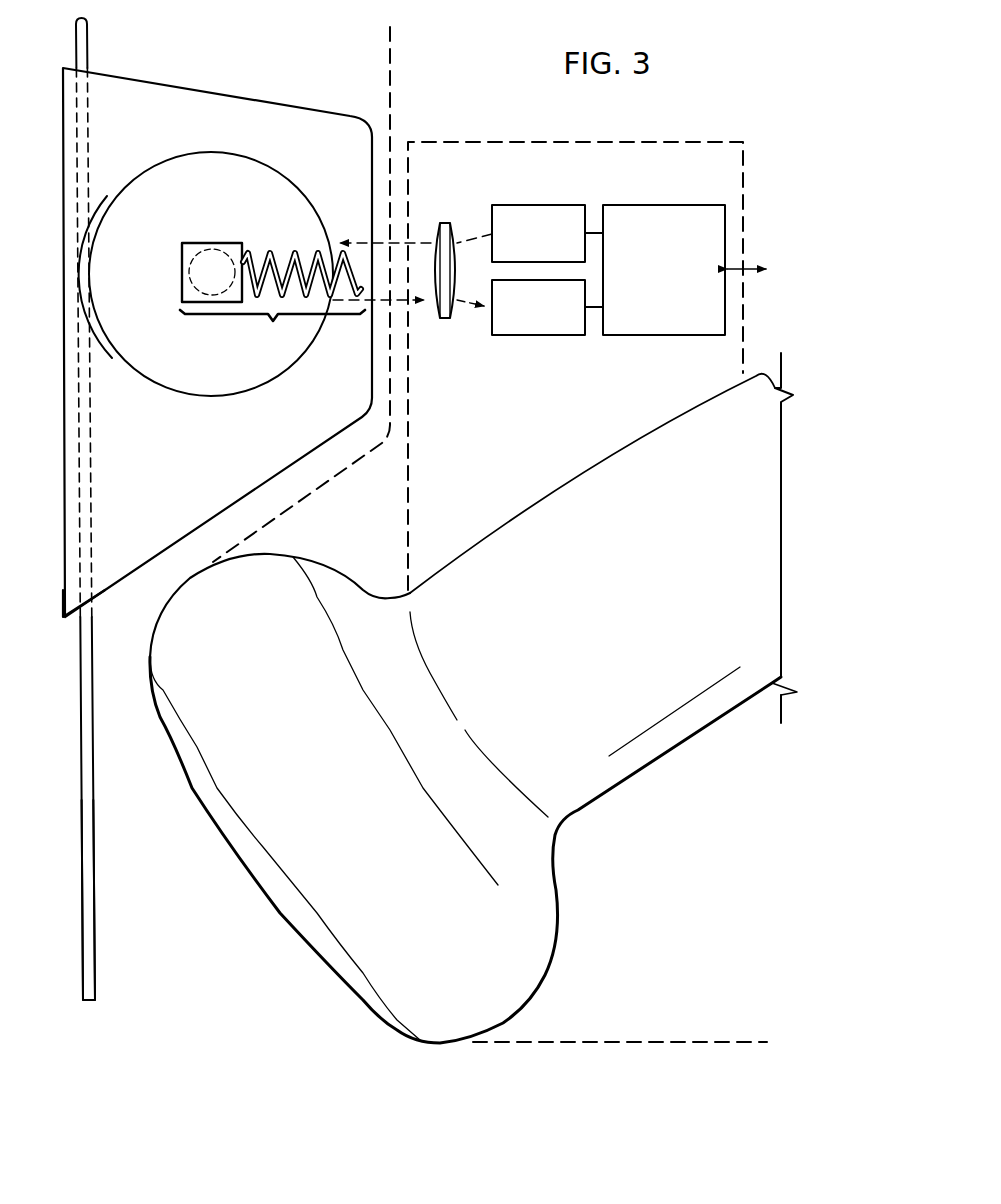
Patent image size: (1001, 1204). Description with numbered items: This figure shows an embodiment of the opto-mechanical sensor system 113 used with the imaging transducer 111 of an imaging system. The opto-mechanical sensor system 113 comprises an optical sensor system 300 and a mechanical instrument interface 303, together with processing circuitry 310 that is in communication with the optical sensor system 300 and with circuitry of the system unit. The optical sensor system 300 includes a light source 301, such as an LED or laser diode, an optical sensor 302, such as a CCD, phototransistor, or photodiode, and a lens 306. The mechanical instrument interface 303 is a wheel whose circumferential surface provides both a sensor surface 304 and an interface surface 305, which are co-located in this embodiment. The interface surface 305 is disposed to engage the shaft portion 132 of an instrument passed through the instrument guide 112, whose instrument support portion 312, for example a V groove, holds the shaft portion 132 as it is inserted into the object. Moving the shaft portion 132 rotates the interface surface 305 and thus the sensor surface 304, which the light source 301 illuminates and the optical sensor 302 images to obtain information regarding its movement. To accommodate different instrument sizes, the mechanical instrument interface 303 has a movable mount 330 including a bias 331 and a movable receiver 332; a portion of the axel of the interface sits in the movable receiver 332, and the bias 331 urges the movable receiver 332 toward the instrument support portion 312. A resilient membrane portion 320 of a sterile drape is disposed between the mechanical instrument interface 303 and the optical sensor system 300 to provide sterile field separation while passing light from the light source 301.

The imaging transducer 111 is at (668, 767).
The instrument guide 112 is at (62, 63).
The opto-mechanical sensor system 113 is at (244, 96).
The shaft portion 132 is at (93, 829).
The optical sensor system 300 is at (674, 138).
The light source 301 is at (537, 206).
The optical sensor 302 is at (537, 336).
The mechanical instrument interface 303 is at (222, 302).
The sensor surface 304 is at (295, 186).
The interface surface 305 is at (97, 327).
The lens 306 is at (443, 224).
The processing circuitry 310 is at (647, 311).
The instrument support portion 312 is at (70, 628).
The resilient membrane portion 320 is at (387, 56).
The movable mount 330 is at (272, 330).
The bias 331 is at (277, 253).
The movable receiver 332 is at (182, 266).